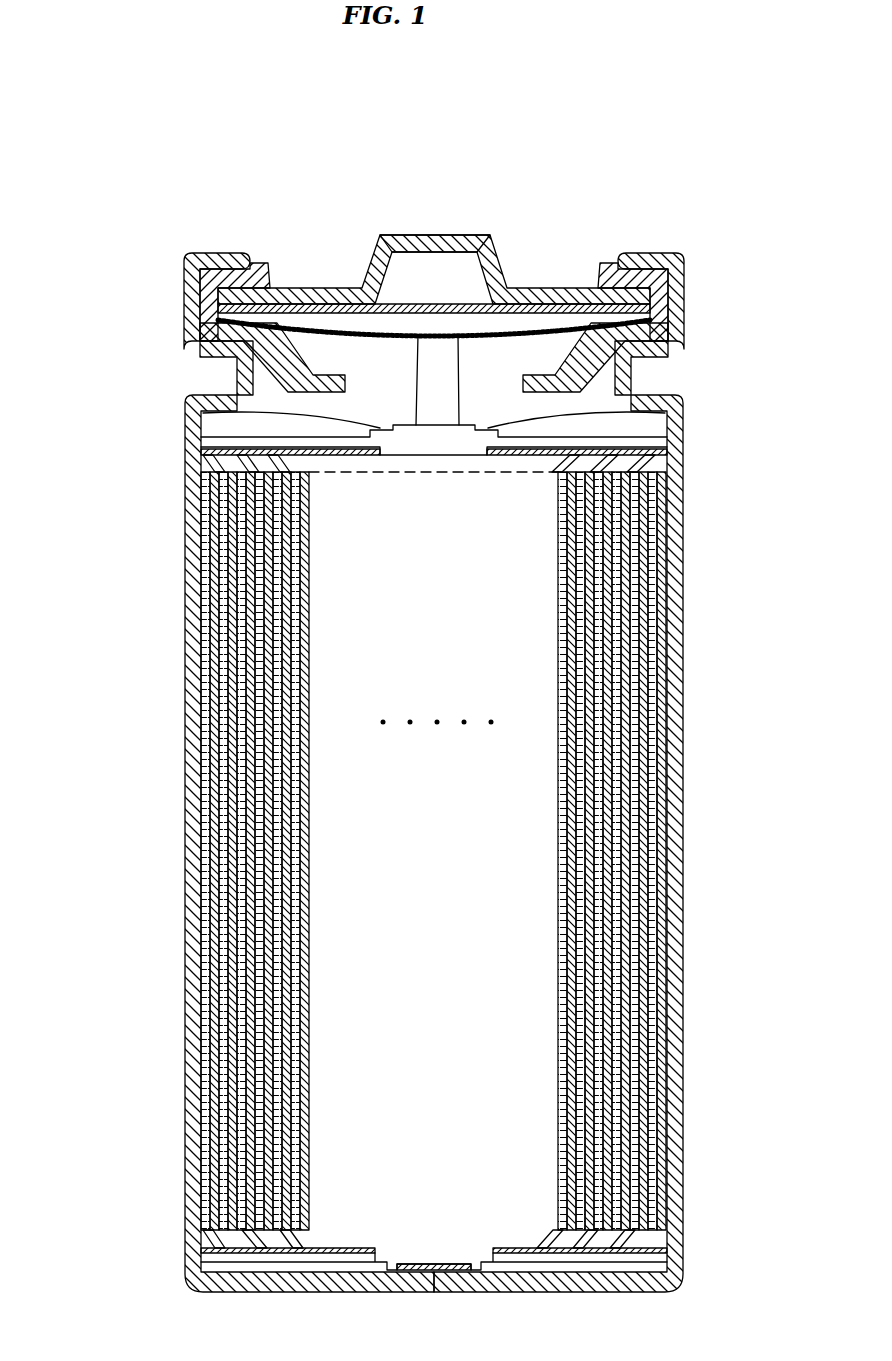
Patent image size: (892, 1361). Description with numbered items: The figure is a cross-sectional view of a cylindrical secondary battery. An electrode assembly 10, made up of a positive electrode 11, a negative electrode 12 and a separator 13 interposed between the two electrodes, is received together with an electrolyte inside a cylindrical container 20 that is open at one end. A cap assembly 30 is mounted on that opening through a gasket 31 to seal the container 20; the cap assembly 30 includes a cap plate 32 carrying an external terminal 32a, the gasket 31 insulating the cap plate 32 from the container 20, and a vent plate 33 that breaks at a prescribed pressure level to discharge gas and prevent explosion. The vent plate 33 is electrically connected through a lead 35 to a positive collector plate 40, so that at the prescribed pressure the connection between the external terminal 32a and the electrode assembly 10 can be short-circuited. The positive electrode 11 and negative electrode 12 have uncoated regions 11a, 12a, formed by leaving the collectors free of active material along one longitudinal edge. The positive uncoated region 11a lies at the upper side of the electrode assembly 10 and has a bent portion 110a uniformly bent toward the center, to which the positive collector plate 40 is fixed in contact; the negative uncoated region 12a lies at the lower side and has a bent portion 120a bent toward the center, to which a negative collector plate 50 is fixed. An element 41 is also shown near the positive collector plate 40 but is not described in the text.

The electrode assembly 10 is at (419, 851).
The positive electrode 11 is at (211, 567).
The uncoated region 11a is at (652, 466).
The negative electrode 12 is at (222, 1216).
The uncoated region 12a is at (626, 1238).
The separator 13 is at (245, 762).
The container 20 is at (684, 663).
The cap assembly 30 is at (541, 263).
The gasket 31 is at (212, 256).
The cap plate 32 is at (350, 292).
The external terminal 32a is at (455, 236).
The vent plate 33 is at (285, 300).
The lead 35 is at (458, 354).
The positive collector plate 40 is at (435, 405).
The insulator 41 is at (200, 396).
The negative collector plate 50 is at (384, 1272).
The bent portion 110a is at (207, 460).
The bent portion 120a is at (207, 1247).